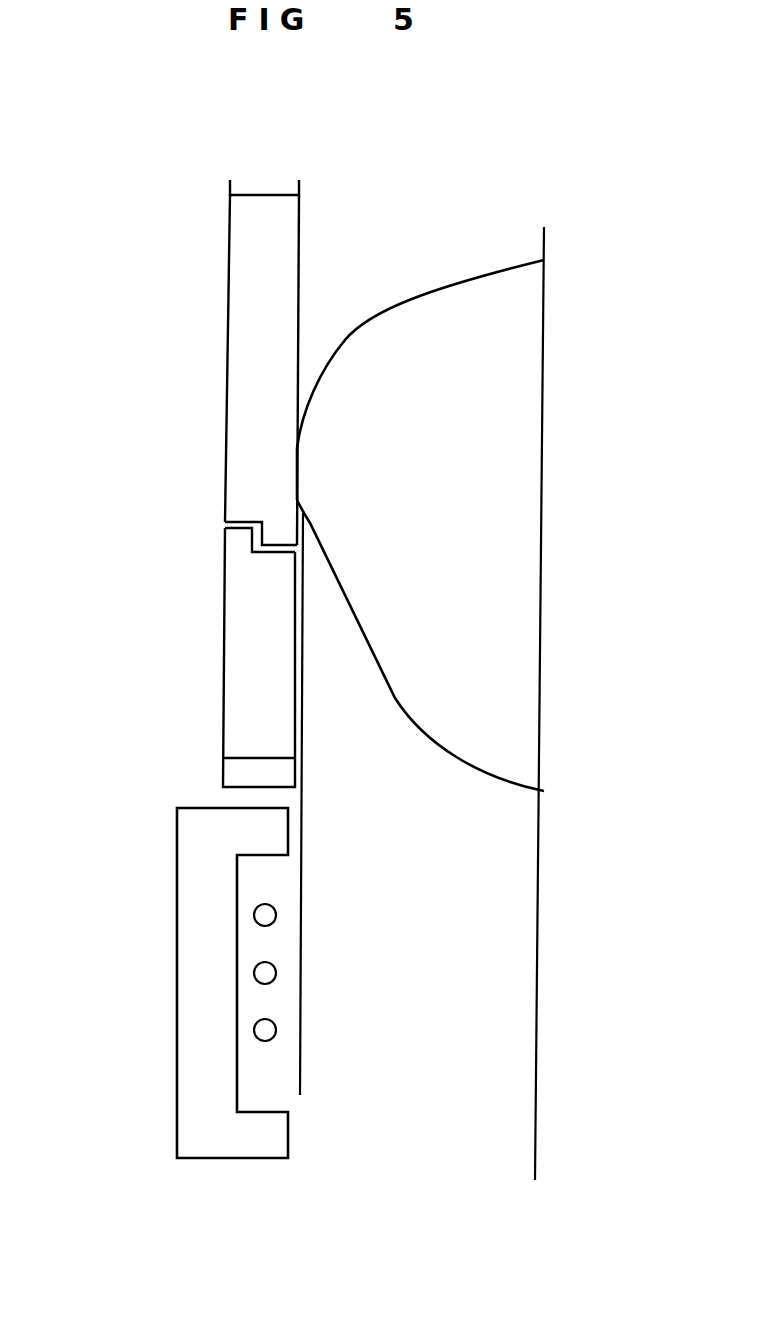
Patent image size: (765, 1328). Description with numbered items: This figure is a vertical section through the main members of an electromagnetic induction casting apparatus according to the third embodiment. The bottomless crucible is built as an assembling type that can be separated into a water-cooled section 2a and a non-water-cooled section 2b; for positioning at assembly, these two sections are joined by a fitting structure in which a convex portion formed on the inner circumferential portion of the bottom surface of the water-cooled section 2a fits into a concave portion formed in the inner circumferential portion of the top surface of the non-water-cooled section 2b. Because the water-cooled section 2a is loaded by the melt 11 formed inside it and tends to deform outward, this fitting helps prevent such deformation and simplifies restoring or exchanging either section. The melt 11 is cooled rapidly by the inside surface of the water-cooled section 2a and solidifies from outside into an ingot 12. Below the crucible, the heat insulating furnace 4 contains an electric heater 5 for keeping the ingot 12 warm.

The water-cooled section 2a is at (245, 378).
The non-water-cooled section 2b is at (243, 668).
The heat insulating furnace 4 is at (177, 987).
The electric heater 5 is at (254, 1030).
The melt 11 is at (513, 530).
The ingot 12 is at (498, 1013).